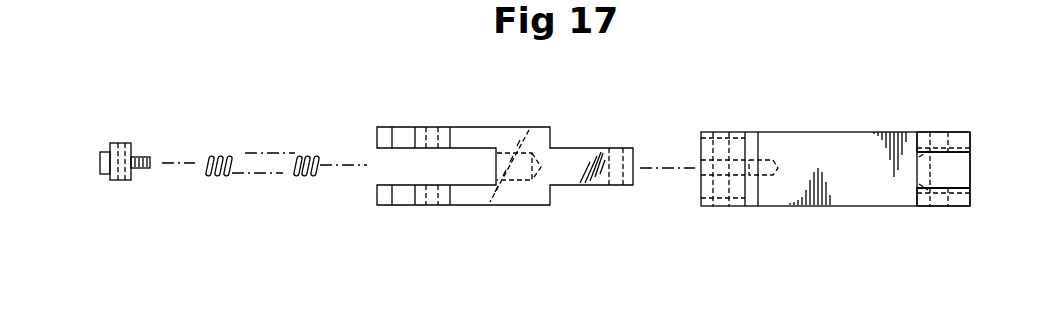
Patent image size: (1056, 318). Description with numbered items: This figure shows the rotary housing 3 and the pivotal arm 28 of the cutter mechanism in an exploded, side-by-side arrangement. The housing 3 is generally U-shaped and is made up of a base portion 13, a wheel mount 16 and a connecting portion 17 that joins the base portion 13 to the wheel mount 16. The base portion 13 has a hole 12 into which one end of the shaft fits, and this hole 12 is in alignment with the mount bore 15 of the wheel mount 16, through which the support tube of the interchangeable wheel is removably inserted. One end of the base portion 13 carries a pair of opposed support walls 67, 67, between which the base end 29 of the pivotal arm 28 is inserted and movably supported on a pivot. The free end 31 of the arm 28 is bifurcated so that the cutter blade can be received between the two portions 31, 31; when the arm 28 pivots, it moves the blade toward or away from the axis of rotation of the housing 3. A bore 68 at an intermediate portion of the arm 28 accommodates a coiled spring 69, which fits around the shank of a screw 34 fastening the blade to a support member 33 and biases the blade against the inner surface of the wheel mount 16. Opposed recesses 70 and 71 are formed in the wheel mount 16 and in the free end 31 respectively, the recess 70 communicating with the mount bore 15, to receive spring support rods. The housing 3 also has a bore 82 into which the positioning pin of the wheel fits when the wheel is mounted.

The rotary housing 3 is at (848, 128).
The hole 12 is at (958, 158).
The base portion 13 is at (972, 182).
The mount bore 15 is at (702, 140).
The wheel mount 16 is at (737, 132).
The connecting portion 17 is at (845, 208).
The pivotal arm 28 is at (538, 126).
The base end 29 is at (597, 165).
The free end 31 is at (382, 133).
The support member 33 is at (125, 143).
The screw 34 is at (99, 166).
The support walls 67 is at (962, 132).
The bore 68 is at (522, 177).
The coiled spring 69 is at (298, 157).
The recess 70 is at (715, 188).
The recess 71 is at (402, 138).
The bore 82 is at (758, 165).